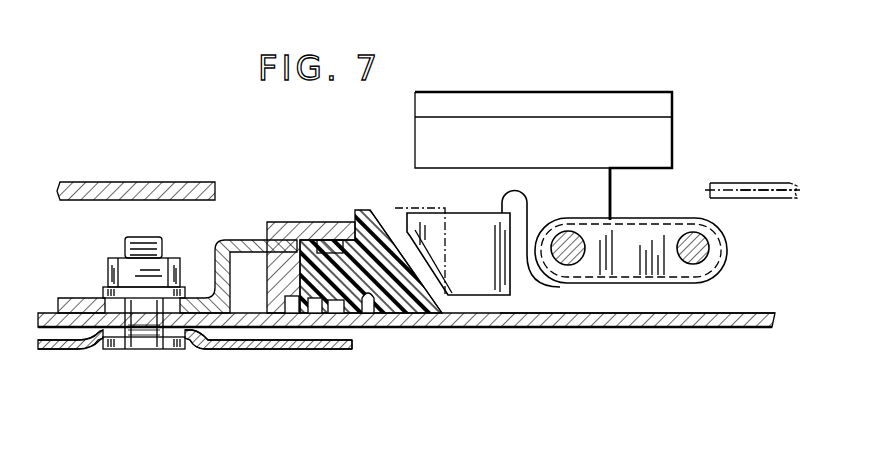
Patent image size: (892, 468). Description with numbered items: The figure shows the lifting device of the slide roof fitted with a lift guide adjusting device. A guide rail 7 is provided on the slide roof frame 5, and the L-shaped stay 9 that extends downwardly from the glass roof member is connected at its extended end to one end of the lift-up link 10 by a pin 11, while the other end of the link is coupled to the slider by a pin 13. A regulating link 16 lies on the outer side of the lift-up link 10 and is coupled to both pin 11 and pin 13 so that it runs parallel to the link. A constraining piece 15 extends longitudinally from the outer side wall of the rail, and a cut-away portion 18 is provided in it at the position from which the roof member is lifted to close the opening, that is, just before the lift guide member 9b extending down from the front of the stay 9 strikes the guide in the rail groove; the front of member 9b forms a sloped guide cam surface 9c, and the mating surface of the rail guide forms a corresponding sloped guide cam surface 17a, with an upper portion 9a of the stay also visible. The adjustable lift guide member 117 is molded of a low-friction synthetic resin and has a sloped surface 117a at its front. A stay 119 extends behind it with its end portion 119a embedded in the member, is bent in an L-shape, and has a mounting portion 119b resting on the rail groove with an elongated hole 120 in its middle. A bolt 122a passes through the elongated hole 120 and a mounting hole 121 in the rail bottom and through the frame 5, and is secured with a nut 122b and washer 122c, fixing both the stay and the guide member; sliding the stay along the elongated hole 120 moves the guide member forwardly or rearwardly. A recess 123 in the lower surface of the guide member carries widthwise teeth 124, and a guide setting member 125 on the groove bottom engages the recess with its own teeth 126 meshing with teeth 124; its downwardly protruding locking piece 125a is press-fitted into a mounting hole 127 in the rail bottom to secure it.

The slide roof frame 5 is at (65, 350).
The guide rail 7 is at (690, 328).
The L-shaped stay 9 is at (665, 145).
The housing upper portion 9a is at (597, 197).
The lift guide member 9b is at (487, 296).
The sloped guide cam surface 9c is at (455, 313).
The lift-up link 10 is at (662, 235).
The pin 11 is at (572, 260).
The pin 13 is at (700, 256).
The constraining piece 15 is at (762, 188).
The regulating link 16 is at (637, 222).
The sloped guide cam surface 17a is at (706, 313).
The cut-away portion 18 is at (712, 188).
The lift guide member 117 is at (333, 208).
The sloped surface 117a is at (392, 228).
The stay 119 is at (232, 240).
The end portion 119a is at (280, 224).
The mounting portion 119b is at (72, 298).
The elongated hole 120 is at (100, 293).
The mounting hole 121 is at (132, 324).
The bolt 122a is at (146, 342).
The nut 122b is at (135, 262).
The washer 122c is at (190, 277).
The recess 123 is at (372, 302).
The teeth 124 is at (303, 284).
The guide setting member 125 is at (252, 345).
The locking piece 125a is at (334, 318).
The teeth 126 is at (318, 328).
The mounting hole 127 is at (294, 328).